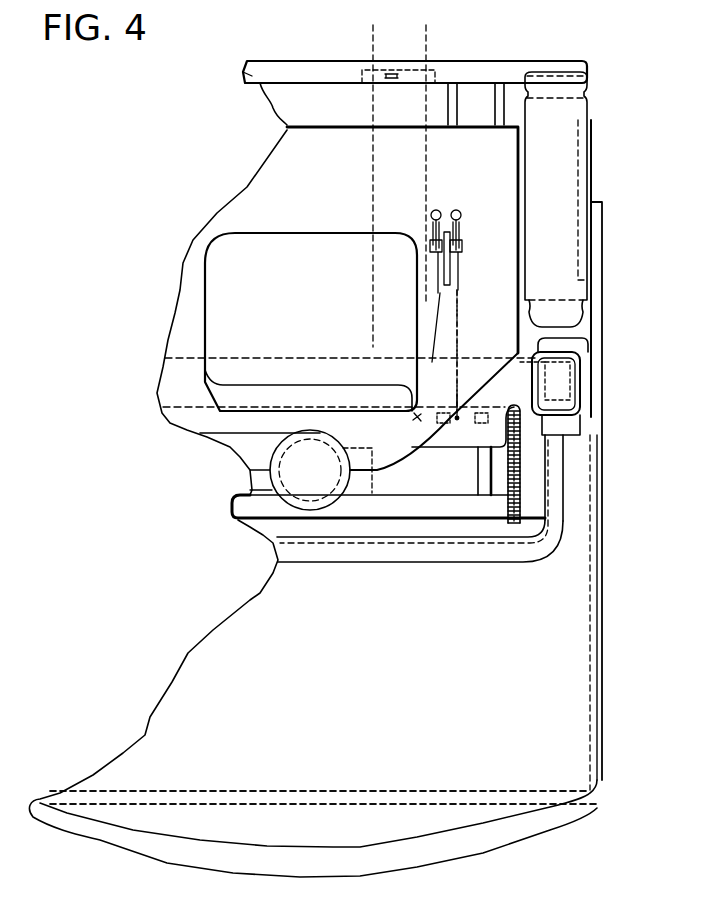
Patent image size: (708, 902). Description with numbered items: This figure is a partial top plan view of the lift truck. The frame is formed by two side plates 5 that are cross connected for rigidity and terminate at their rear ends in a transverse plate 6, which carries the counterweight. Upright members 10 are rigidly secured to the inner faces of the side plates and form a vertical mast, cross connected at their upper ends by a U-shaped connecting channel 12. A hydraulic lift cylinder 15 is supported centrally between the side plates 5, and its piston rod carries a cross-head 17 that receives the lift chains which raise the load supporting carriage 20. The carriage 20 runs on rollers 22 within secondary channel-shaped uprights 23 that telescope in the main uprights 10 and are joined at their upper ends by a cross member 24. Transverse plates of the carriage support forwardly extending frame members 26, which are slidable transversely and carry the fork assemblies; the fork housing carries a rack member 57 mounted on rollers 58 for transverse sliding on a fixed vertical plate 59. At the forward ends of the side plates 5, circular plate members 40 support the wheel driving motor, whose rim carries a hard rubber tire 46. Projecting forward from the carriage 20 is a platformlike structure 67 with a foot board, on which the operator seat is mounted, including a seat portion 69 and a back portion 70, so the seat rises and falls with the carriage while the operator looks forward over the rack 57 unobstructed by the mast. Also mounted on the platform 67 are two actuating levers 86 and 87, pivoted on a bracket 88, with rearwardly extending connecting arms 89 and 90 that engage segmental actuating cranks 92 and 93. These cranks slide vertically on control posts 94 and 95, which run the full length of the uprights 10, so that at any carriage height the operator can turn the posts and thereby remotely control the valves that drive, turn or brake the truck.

The side plates 5 is at (598, 374).
The transverse plate 6 is at (390, 795).
The upright members 10 is at (590, 360).
The U-shaped connecting channel 12 is at (423, 556).
The hydraulic lift cylinder 15 is at (317, 503).
The cross-head 17 is at (433, 485).
The load supporting carriage 20 is at (586, 423).
The rollers 22 is at (572, 393).
The secondary channel-shaped uprights 23 is at (582, 367).
The cross member 24 is at (430, 423).
The frame member 26 is at (498, 105).
The circular plate members 40 is at (594, 158).
The hard rubber tire 46 is at (585, 97).
The rack member 57 is at (283, 65).
The rollers 58 is at (398, 70).
The fixed vertical plate 59 is at (262, 78).
The platformlike structure 67 is at (248, 187).
The seat portion 69 is at (272, 250).
The back portion 70 is at (255, 388).
The actuating lever 86 is at (462, 224).
The actuating lever 87 is at (440, 212).
The bracket 88 is at (451, 262).
The connecting arm 89 is at (458, 313).
The connecting arm 90 is at (426, 306).
The segmental actuating crank 92 is at (473, 412).
The segmental actuating crank 93 is at (418, 421).
The control post 94 is at (479, 425).
The control post 95 is at (445, 428).